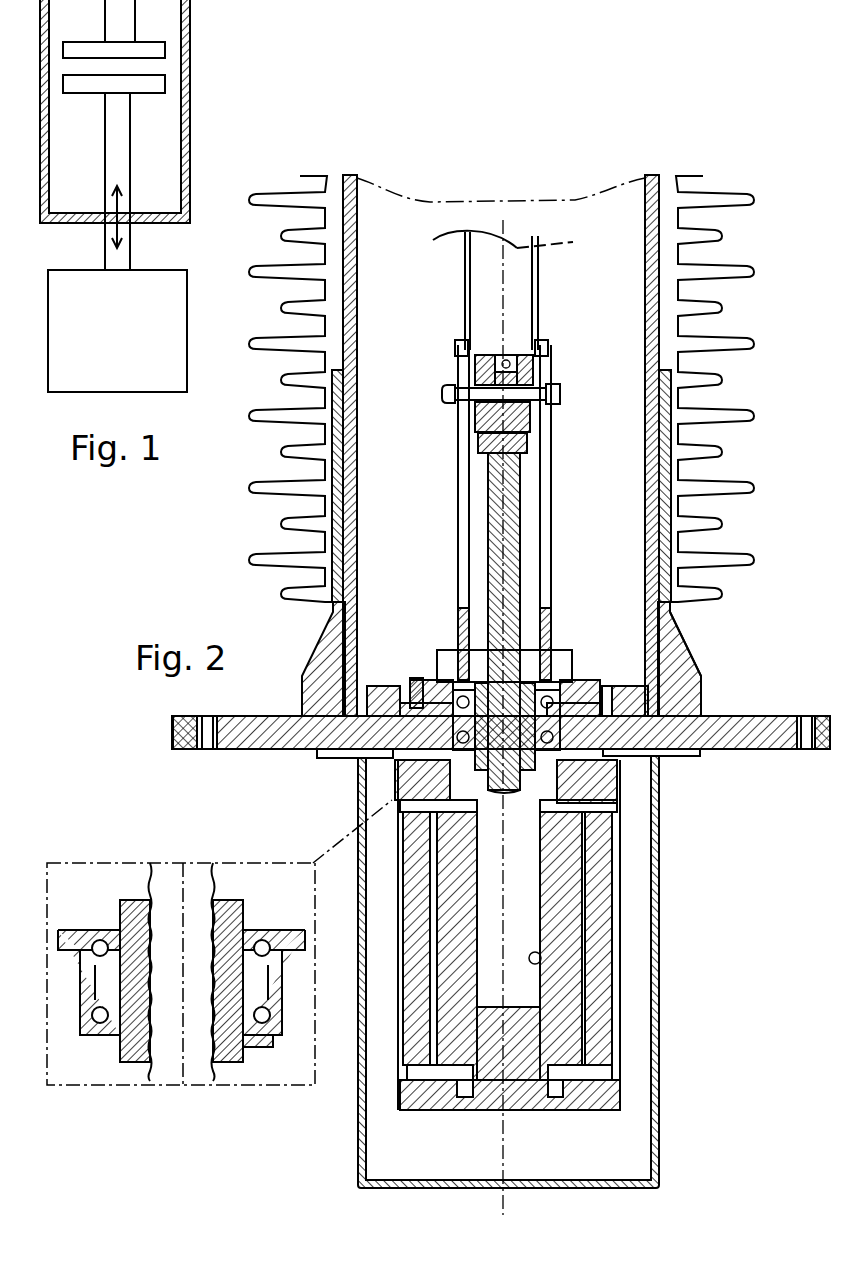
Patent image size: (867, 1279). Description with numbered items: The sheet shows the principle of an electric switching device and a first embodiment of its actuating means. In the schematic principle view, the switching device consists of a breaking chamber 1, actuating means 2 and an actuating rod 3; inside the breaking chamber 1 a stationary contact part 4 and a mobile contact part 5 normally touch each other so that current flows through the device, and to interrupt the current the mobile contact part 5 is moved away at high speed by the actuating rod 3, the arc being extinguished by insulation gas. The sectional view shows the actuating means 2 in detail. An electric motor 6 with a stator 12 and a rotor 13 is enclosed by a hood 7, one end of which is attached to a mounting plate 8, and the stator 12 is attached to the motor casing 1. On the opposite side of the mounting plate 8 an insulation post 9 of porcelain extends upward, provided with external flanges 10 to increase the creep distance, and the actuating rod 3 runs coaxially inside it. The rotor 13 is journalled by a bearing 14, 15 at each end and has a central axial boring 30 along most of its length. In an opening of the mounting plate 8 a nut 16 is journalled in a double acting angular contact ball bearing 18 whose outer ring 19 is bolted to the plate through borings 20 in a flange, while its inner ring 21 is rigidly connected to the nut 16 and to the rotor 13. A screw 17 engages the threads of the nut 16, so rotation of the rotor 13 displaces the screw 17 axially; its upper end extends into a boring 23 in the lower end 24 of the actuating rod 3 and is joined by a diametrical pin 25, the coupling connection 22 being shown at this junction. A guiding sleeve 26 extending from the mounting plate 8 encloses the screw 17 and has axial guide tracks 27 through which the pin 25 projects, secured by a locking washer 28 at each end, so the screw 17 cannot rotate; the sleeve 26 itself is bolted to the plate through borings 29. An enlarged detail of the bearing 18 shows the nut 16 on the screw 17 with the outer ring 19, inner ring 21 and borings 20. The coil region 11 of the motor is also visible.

In FIG. 1, the breaking chamber 1 is at (182, 128).
In FIG. 1, the actuating means 2 is at (150, 335).
In FIG. 2, the actuating means 2 is at (752, 852).
In FIG. 1, the actuating rod 3 is at (125, 232).
In FIG. 2, the actuating rod 3 is at (540, 278).
In FIG. 1, the stationary contact part 4 is at (148, 48).
In FIG. 1, the mobile contact part 5 is at (148, 84).
In FIG. 2, the electric motor 6 is at (640, 1078).
In FIG. 2, the hood 7 is at (658, 1042).
In FIG. 2, the mounting plate 8 is at (750, 737).
In FIG. 2, the insulation post 9 is at (668, 287).
In FIG. 2, the flanges 10 is at (727, 343).
In FIG. 2, the outer coil / stator 11 is at (618, 846).
In FIG. 2, the stator 12 is at (592, 888).
In FIG. 2, the rotor 13 is at (573, 917).
In FIG. 2, the bearing 14 is at (552, 1088).
In FIG. 2, the bearing 15 is at (553, 783).
In FIG. 2, the nut 16 is at (540, 690).
In FIG. 2, the screw 17 is at (510, 527).
In FIG. 2, the double acting angular contact ball bearing 18 is at (707, 702).
In FIG. 2, the outer ring 19 is at (277, 985).
In FIG. 2, the borings 20 is at (293, 933).
In FIG. 2, the inner ring 21 is at (252, 1043).
In FIG. 2, the coupling pin 22 is at (473, 427).
In FIG. 2, the boring 23 is at (540, 366).
In FIG. 2, the lower end 24 is at (551, 388).
In FIG. 2, the pin 25 is at (556, 401).
In FIG. 2, the guiding sleeve 26 is at (545, 627).
In FIG. 2, the guide tracks 27 is at (462, 482).
In FIG. 2, the locking washer 28 is at (553, 422).
In FIG. 2, the borings 29 is at (583, 700).
In FIG. 2, the central axial boring 30 is at (541, 962).